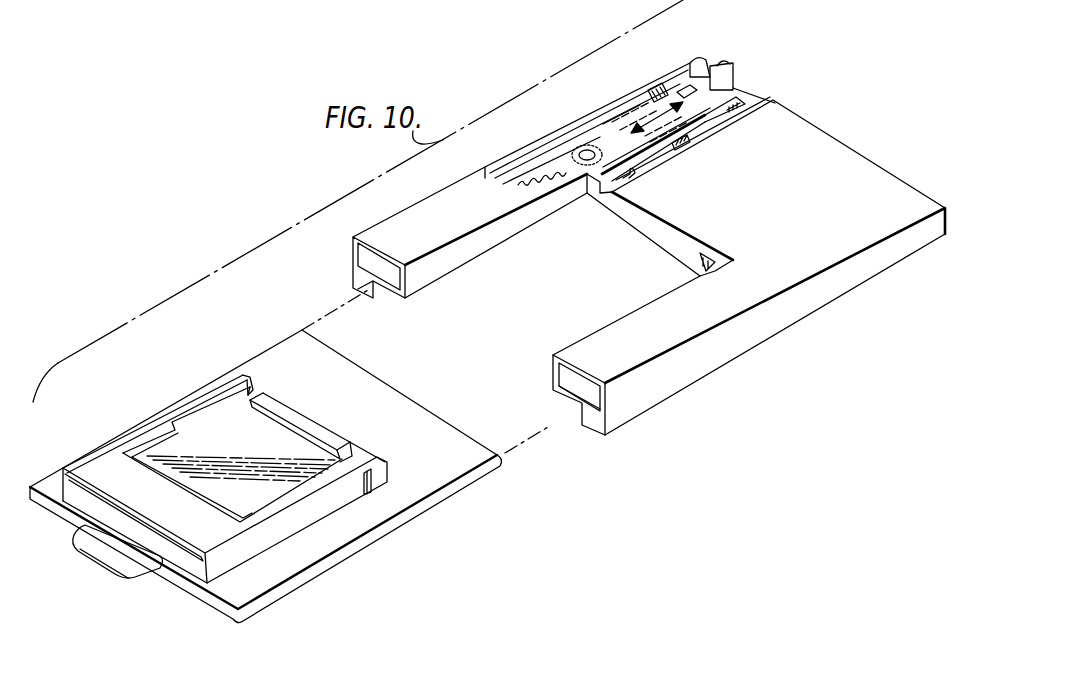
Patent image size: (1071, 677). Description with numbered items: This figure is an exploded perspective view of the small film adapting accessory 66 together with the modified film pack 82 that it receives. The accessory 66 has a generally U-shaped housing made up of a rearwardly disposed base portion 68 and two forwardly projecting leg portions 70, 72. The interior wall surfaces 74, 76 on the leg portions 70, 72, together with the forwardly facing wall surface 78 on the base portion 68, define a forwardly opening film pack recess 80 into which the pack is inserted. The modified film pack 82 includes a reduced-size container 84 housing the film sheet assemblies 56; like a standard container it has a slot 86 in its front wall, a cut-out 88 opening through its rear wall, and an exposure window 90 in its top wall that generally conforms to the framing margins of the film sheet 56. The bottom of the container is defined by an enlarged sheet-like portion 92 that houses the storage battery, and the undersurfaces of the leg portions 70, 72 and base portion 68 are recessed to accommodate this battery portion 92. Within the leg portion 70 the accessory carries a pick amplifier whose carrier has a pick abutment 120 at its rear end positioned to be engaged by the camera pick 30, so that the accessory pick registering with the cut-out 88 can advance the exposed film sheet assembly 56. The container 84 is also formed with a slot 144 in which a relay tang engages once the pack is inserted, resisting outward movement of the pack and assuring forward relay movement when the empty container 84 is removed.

The camera pick 30 is at (690, 78).
The film sheet assembly 56 is at (197, 493).
The small film adapting accessory 66 is at (778, 331).
The base portion 68 is at (805, 150).
The leg portion 70 is at (430, 215).
The leg portion 72 is at (633, 343).
The interior wall surface 74 is at (455, 257).
The interior wall surface 76 is at (578, 337).
The forwardly facing wall surface 78 is at (680, 245).
The film pack recess 80 is at (607, 240).
The modified film pack 82 is at (182, 393).
The container 84 is at (290, 413).
The slot 86 is at (180, 553).
The cut-out 88 is at (257, 392).
The exposure window 90 is at (305, 440).
The sheet-like battery portion 92 is at (415, 483).
The pick abutment 120 is at (735, 82).
The slot 144 is at (369, 484).